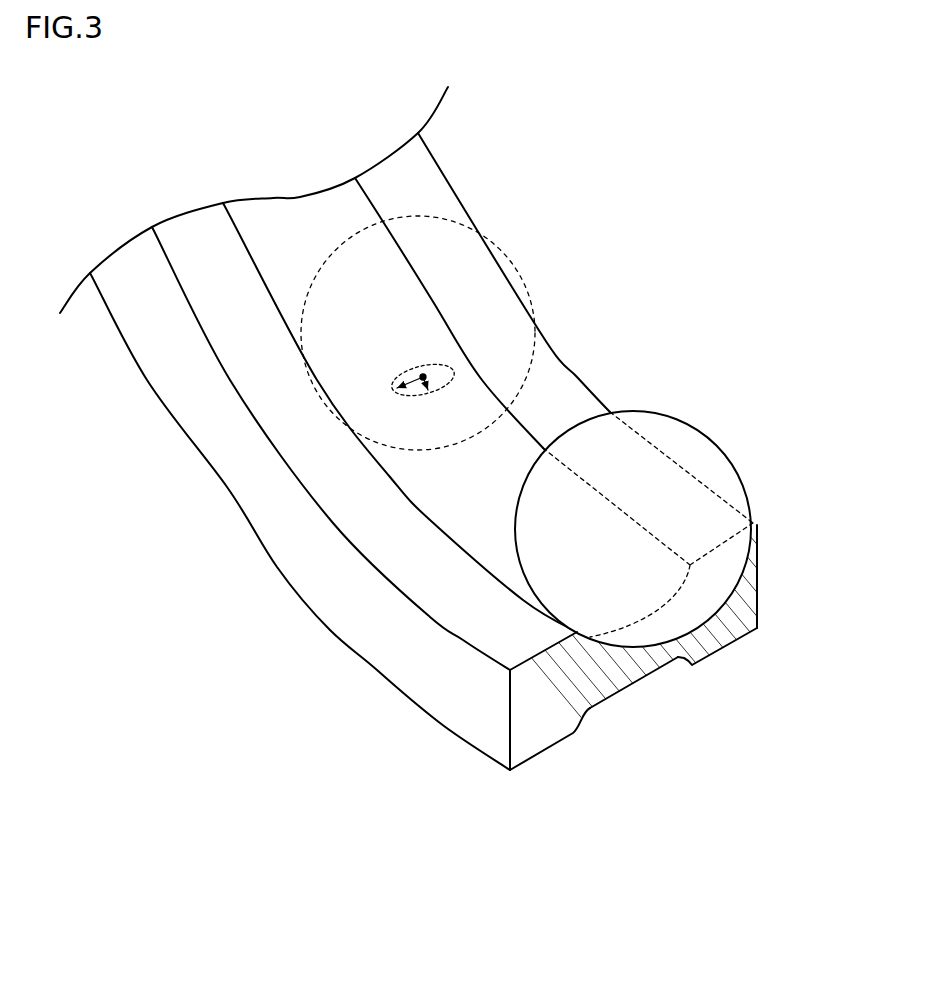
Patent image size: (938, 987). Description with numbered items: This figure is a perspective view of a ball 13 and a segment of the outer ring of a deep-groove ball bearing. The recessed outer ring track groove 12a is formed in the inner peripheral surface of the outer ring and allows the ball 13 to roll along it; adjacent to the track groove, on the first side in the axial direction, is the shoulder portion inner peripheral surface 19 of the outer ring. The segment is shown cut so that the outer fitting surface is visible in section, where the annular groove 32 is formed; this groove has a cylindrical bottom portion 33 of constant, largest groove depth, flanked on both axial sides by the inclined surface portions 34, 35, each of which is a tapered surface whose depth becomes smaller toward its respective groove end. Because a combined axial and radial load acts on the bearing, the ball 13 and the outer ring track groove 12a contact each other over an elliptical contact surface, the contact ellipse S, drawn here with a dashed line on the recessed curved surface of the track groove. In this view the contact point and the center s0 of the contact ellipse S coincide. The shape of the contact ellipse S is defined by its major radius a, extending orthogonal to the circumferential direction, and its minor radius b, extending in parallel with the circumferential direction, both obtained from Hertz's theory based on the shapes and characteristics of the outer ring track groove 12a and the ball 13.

The outer ring track groove 12a is at (440, 510).
The ball 13 is at (508, 262).
The shoulder portion inner peripheral surface 19 is at (568, 398).
The annular groove 32 is at (643, 680).
The bottom portion 33 is at (622, 695).
The inclined surface portion 34 is at (683, 664).
The inclined surface portion 35 is at (584, 723).
The contact ellipse S is at (397, 372).
The center of the contact ellipse s0 is at (423, 376).
The major radius a is at (410, 390).
The minor radius b is at (430, 379).